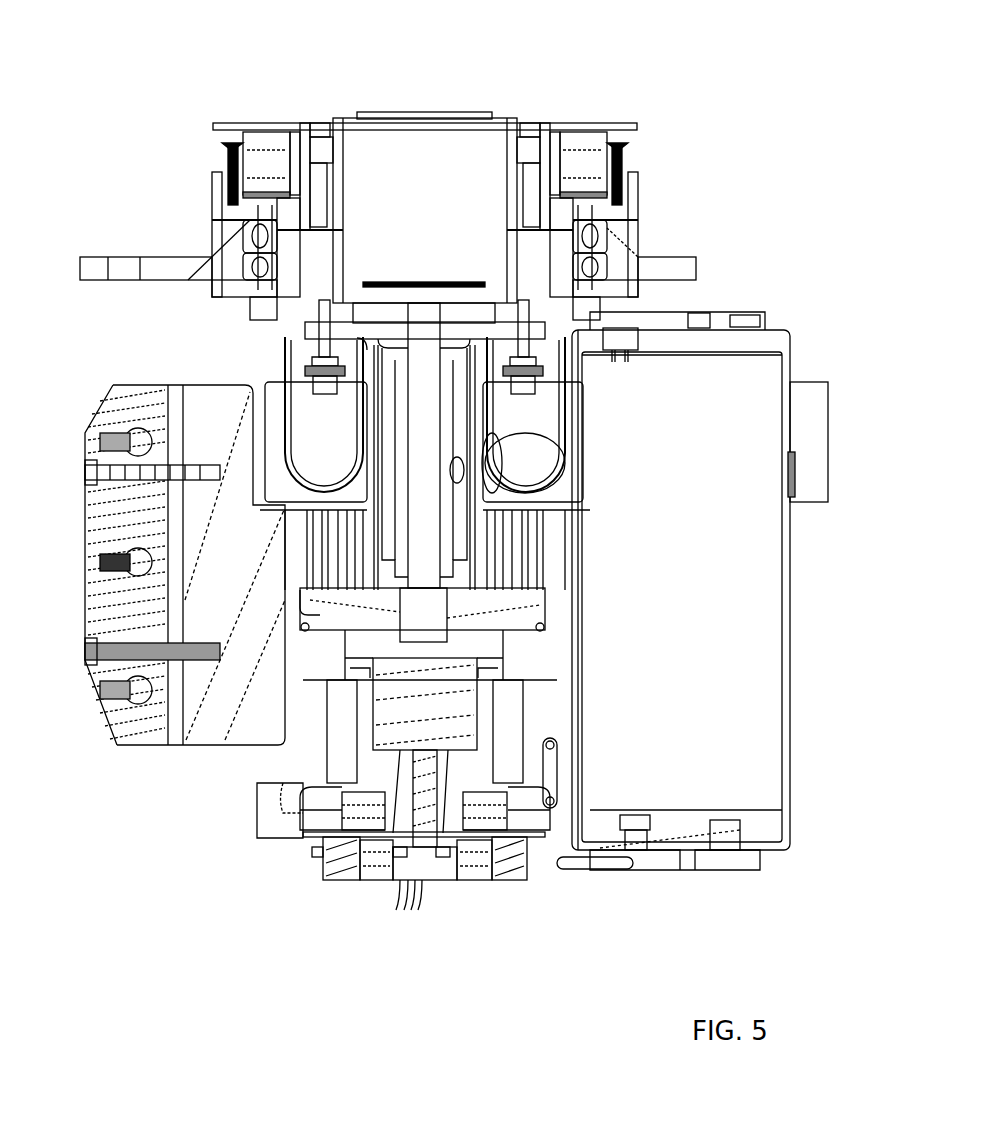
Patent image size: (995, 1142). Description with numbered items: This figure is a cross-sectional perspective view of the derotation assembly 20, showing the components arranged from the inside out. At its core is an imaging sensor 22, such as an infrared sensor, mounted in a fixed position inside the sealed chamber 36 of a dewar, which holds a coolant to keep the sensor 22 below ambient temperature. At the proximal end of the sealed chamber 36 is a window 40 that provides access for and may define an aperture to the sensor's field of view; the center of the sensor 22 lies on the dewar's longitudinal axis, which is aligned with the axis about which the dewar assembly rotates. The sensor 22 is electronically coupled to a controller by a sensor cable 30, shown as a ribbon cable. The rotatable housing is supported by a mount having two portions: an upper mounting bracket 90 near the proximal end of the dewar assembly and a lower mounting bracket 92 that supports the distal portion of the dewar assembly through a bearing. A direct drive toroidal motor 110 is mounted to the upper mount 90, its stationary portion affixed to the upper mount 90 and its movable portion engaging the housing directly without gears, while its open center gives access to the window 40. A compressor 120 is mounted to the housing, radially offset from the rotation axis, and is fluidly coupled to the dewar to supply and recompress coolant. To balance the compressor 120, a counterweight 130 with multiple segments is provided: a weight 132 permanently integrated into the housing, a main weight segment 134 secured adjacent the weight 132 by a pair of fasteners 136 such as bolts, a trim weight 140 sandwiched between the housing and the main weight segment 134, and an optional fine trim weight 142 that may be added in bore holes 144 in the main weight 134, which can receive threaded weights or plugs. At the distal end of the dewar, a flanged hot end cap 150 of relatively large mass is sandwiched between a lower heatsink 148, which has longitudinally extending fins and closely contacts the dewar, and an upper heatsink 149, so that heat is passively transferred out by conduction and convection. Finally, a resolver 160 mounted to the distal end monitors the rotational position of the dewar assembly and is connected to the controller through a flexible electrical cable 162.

The derotation assembly 20 is at (152, 52).
The imaging sensor 22 is at (451, 273).
The sensor cable 30 is at (808, 396).
The sealed chamber 36 is at (463, 165).
The window 40 is at (461, 101).
The upper mounting bracket 90 is at (162, 262).
The lower mounting bracket 92 is at (272, 824).
The motor 110 is at (200, 120).
The compressor 120 is at (704, 780).
The counterweight 130 is at (114, 759).
The weight 132 is at (206, 404).
The main weight segment 134 is at (122, 600).
The fasteners 136 is at (130, 470).
The trim weight 140 is at (176, 395).
The fine trim weight 142 is at (114, 440).
The bore holes 144 is at (140, 690).
The lower heatsink 148 is at (308, 572).
The upper heatsink 149 is at (341, 724).
The end cap 150 is at (337, 622).
The resolver 160 is at (466, 877).
The flexible electrical cable 162 is at (398, 902).